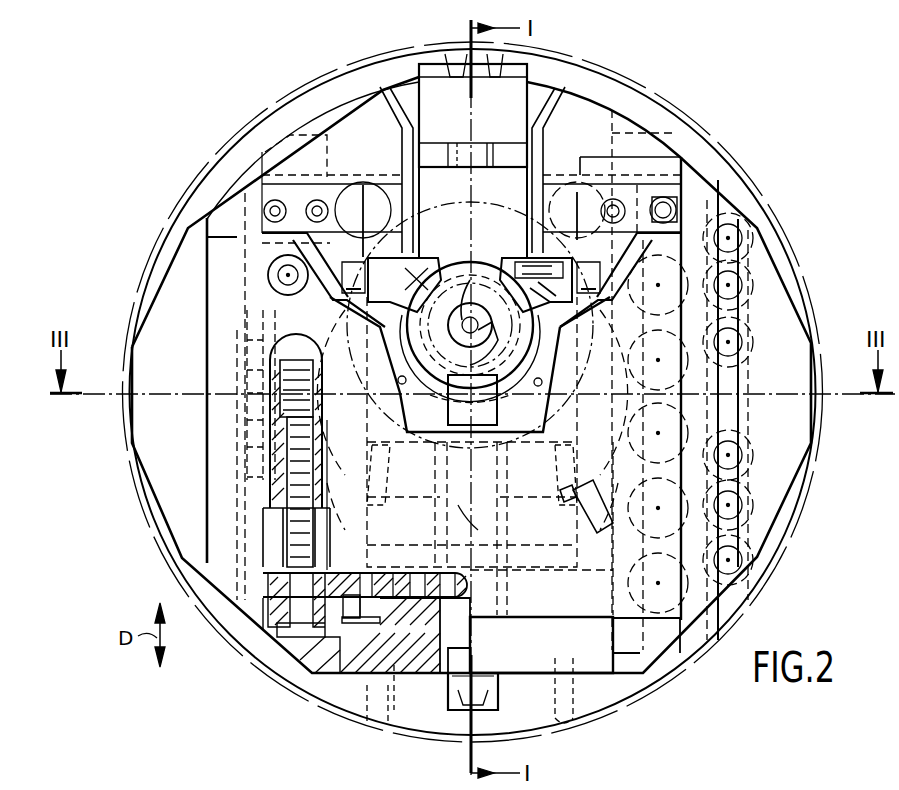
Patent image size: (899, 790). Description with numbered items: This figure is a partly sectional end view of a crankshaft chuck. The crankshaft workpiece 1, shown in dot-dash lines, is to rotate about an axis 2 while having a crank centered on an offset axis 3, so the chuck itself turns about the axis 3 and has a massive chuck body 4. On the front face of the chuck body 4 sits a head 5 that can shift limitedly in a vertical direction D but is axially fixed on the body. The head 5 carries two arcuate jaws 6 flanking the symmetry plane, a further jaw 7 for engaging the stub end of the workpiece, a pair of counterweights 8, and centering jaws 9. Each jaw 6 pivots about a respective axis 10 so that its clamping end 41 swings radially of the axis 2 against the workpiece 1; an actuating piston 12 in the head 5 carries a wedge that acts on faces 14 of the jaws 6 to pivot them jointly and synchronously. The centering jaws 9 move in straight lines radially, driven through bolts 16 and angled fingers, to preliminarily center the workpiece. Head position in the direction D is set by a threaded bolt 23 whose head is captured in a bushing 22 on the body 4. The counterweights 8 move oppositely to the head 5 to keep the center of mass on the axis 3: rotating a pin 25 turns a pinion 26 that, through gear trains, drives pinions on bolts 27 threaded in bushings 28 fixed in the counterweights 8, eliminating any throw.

The crankshaft workpiece 1 is at (493, 253).
The axis 2 is at (460, 247).
The axis 3 is at (470, 364).
The chuck body 4 is at (776, 220).
The head 5 is at (487, 182).
The jaws 6 is at (318, 335).
The jaw 7 is at (470, 421).
The counterweights 8 is at (130, 438).
The centering jaws 9 is at (317, 183).
The axes 10 is at (402, 384).
The actuating piston 12 is at (560, 414).
The faces 14 is at (435, 203).
The bolts 16 is at (393, 192).
The bushing 22 is at (505, 92).
The threaded bolt 23 is at (460, 145).
The pin 25 is at (498, 693).
The pinion 26 is at (455, 598).
The bolts 27 is at (273, 522).
The bushings 28 is at (273, 463).
The clamping ends 41 is at (470, 284).